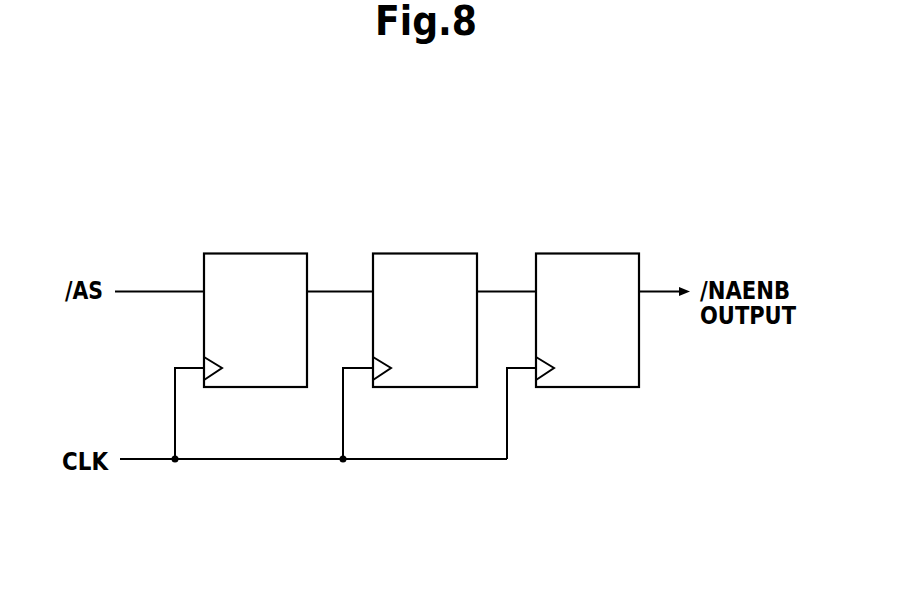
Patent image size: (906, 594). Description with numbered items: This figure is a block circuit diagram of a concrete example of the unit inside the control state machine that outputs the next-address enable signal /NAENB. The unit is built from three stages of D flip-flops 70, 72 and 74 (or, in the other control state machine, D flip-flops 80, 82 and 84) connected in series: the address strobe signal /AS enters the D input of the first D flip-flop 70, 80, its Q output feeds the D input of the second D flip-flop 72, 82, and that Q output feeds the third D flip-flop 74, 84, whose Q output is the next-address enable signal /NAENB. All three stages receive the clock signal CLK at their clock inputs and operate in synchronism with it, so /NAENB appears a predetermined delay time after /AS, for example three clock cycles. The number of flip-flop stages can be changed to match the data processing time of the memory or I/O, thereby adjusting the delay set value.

The D flip-flop 70 is at (252, 270).
The D flip-flop 72 is at (422, 270).
The D flip-flop 74 is at (585, 270).
The D flip-flop 80 is at (225, 253).
The D flip-flop 82 is at (395, 253).
The D flip-flop 84 is at (558, 253).